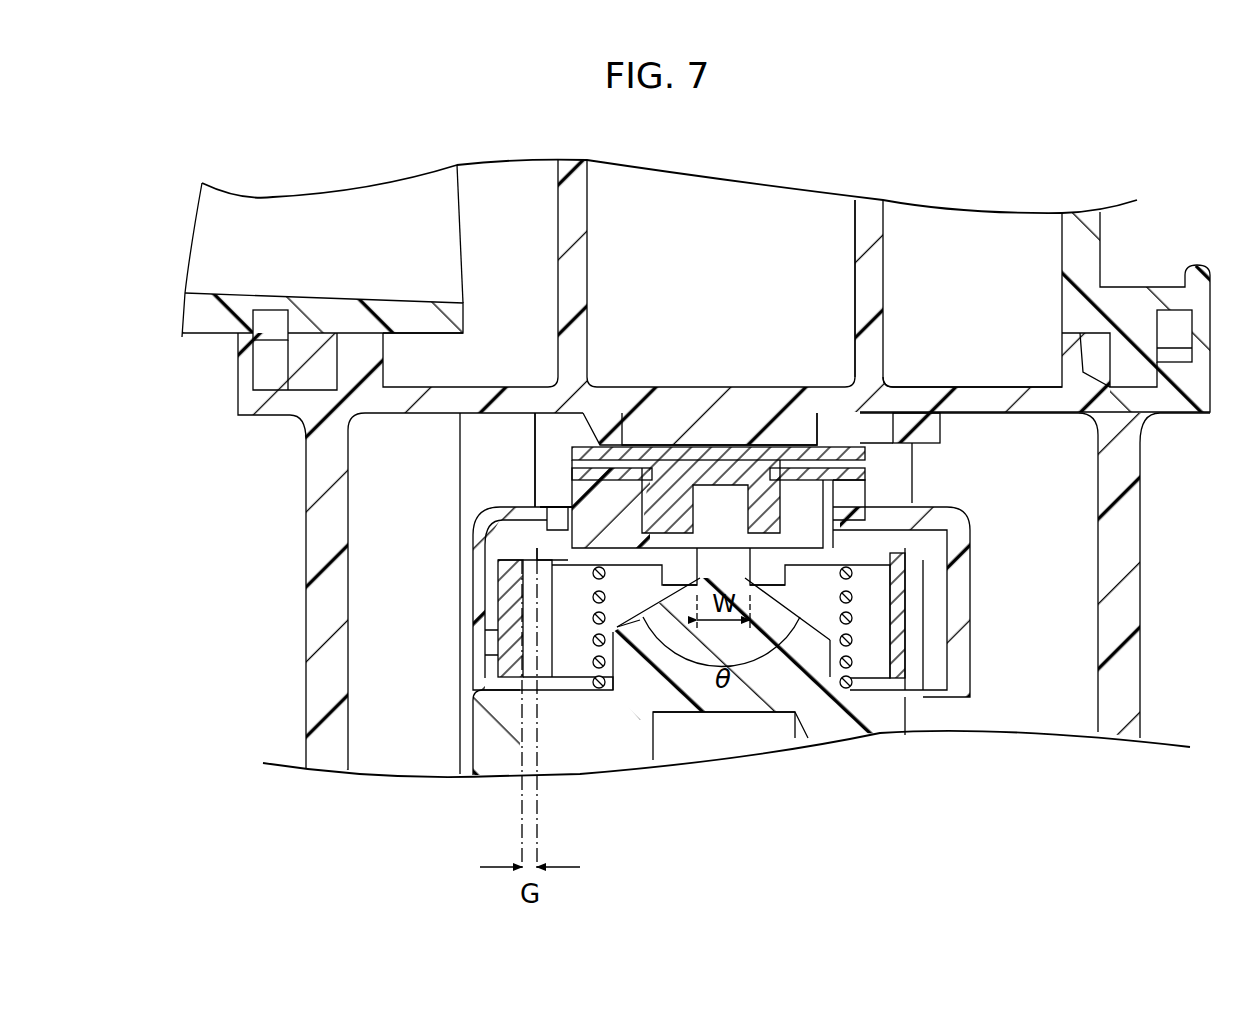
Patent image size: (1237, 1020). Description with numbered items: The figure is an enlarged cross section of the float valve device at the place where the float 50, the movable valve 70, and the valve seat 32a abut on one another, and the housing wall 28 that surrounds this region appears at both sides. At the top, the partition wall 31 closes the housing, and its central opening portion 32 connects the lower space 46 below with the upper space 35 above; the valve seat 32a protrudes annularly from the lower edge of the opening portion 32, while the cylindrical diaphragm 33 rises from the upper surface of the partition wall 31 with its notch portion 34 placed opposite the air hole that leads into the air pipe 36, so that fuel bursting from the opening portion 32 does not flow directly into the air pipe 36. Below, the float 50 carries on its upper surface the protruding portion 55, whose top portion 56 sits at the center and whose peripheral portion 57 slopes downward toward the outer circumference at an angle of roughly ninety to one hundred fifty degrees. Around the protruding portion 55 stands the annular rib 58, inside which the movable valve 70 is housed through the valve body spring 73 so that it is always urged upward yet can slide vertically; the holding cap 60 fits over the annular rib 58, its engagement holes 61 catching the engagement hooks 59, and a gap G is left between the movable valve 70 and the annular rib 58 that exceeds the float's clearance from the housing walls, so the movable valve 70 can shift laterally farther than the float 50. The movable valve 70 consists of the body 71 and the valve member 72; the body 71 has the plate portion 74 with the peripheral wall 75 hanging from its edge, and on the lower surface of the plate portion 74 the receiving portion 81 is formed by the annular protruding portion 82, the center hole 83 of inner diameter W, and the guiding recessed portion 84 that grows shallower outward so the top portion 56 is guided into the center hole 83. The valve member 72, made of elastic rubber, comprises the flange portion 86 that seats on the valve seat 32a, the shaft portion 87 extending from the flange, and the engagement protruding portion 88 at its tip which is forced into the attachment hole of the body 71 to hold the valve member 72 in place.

The casing 28 is at (305, 557).
The partition wall 31 is at (530, 387).
The opening portion 32 is at (773, 403).
The valve seat 32a is at (825, 440).
The cylindrical diaphragm 33 is at (548, 217).
The notch portion 34 is at (880, 248).
The upper space 35 is at (1007, 237).
The air pipe 36 is at (205, 317).
The lower space 46 is at (370, 637).
The float 50 is at (497, 757).
The protruding portion 55 is at (765, 715).
The top portion 56 is at (798, 622).
The peripheral portion 57 is at (755, 578).
The annular rib 58 is at (513, 563).
The engagement hooks 59 is at (465, 647).
The holding cap 60 is at (470, 540).
The engagement holes 61 is at (478, 623).
The movable valve 70 is at (545, 582).
The body 71 is at (917, 550).
The valve member 72 is at (810, 414).
The valve body spring 73 is at (648, 619).
The plate portion 74 is at (540, 527).
The peripheral wall 75 is at (897, 583).
The receiving portion 81 is at (812, 603).
The annular protruding portion 82 is at (667, 578).
The center hole 83 is at (697, 575).
The guiding recessed portion 84 is at (660, 592).
The flange portion 86 is at (865, 450).
The shaft portion 87 is at (740, 476).
The engagement protruding portion 88 is at (770, 503).